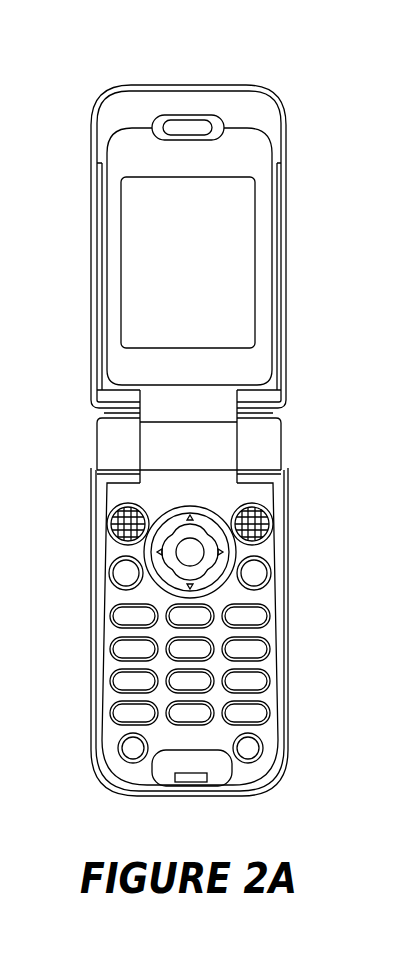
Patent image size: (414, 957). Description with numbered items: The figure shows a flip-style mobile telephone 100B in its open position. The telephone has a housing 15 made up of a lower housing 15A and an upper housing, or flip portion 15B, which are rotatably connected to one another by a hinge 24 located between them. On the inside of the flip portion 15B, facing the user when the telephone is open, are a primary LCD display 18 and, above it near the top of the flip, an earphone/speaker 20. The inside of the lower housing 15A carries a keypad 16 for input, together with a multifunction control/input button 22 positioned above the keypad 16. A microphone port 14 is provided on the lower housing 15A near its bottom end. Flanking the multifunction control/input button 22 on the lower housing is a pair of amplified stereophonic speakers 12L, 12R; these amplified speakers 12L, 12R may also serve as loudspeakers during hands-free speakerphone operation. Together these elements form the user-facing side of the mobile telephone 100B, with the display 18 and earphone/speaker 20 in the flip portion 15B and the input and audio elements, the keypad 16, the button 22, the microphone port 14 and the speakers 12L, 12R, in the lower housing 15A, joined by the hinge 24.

The microphone port 14 is at (198, 777).
The housing 15 is at (288, 233).
The lower housing 15A is at (289, 681).
The upper housing (flip portion) 15B is at (288, 279).
The keypad 16 is at (130, 680).
The primary LCD display 18 is at (243, 305).
The earphone/speaker 20 is at (188, 127).
The multifunction control/input button 22 is at (190, 553).
The hinge 24 is at (284, 446).
The amplified stereophonic speaker (left) 12L is at (113, 524).
The amplified stereophonic speaker (right) 12R is at (256, 524).
The flip-style mobile telephone 100B is at (278, 594).